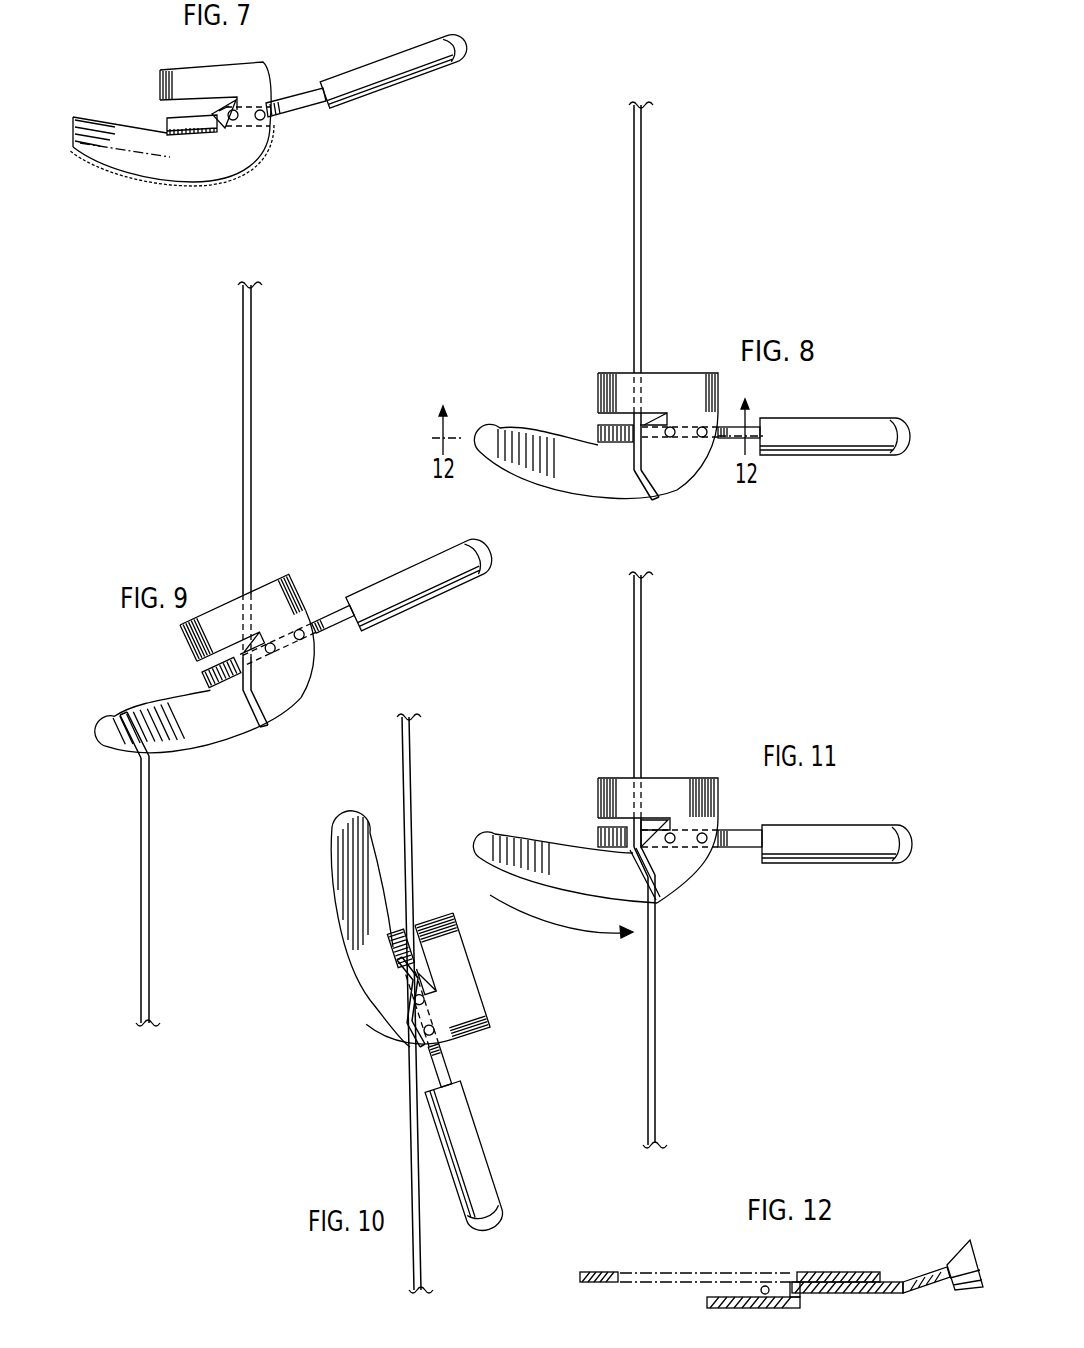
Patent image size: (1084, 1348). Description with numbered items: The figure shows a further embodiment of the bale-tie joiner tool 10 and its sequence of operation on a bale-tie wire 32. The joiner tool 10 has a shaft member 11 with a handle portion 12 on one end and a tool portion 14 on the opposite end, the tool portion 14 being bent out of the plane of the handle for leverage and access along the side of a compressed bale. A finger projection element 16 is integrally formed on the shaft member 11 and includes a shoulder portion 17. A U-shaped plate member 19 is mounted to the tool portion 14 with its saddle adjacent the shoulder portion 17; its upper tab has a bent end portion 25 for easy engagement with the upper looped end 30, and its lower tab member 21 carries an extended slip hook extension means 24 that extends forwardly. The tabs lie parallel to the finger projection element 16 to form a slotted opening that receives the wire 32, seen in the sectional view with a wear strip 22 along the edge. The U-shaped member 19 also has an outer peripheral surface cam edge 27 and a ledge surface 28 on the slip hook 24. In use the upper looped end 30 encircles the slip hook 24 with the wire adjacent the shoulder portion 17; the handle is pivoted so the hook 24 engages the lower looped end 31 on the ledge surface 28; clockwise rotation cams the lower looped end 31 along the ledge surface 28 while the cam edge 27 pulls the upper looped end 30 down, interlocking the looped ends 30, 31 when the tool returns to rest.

In FIG. 7, the bale-tie joiner tool 10 is at (270, 114).
In FIG. 9, the bale-tie joiner tool 10 is at (294, 652).
In FIG. 7, the shaft member 11 is at (309, 111).
In FIG. 8, the shaft member 11 is at (753, 424).
In FIG. 9, the shaft member 11 is at (330, 610).
In FIG. 10, the shaft member 11 is at (450, 1068).
In FIG. 11, the shaft member 11 is at (747, 832).
In FIG. 12, the shaft member 11 is at (902, 1280).
In FIG. 7, the handle portion 12 is at (416, 84).
In FIG. 8, the handle portion 12 is at (851, 425).
In FIG. 9, the handle portion 12 is at (429, 553).
In FIG. 10, the handle portion 12 is at (495, 1157).
In FIG. 11, the handle portion 12 is at (863, 830).
In FIG. 7, the tool portion 14 is at (151, 105).
In FIG. 8, the tool portion 14 is at (582, 417).
In FIG. 9, the tool portion 14 is at (183, 667).
In FIG. 11, the tool portion 14 is at (583, 798).
In FIG. 7, the finger projection element 16 is at (168, 125).
In FIG. 12, the finger projection element 16 is at (731, 1304).
In FIG. 7, the shoulder portion 17 is at (234, 107).
In FIG. 8, the shoulder portion 17 is at (637, 430).
In FIG. 12, the shoulder portion 17 is at (803, 1298).
In FIG. 7, the U-shaped plate member 19 is at (248, 159).
In FIG. 8, the U-shaped plate member 19 is at (697, 409).
In FIG. 9, the U-shaped plate member 19 is at (302, 680).
In FIG. 10, the U-shaped plate member 19 is at (474, 1018).
In FIG. 11, the U-shaped plate member 19 is at (684, 812).
In FIG. 7, the lower tab member 21 is at (207, 77).
In FIG. 8, the lower tab member 21 is at (625, 383).
In FIG. 9, the lower tab member 21 is at (225, 620).
In FIG. 10, the lower tab member 21 is at (345, 950).
In FIG. 11, the lower tab member 21 is at (617, 778).
In FIG. 12, the lower tab member 21 is at (678, 1277).
In FIG. 7, the wear strip 22 is at (266, 163).
In FIG. 7, the extended slip hook extension means 24 is at (117, 163).
In FIG. 8, the extended slip hook extension means 24 is at (495, 447).
In FIG. 10, the extended slip hook extension means 24 is at (342, 845).
In FIG. 11, the extended slip hook extension means 24 is at (503, 833).
In FIG. 12, the extended slip hook extension means 24 is at (642, 1277).
In FIG. 7, the end portion 25 is at (164, 68).
In FIG. 8, the end portion 25 is at (602, 393).
In FIG. 9, the outer peripheral surface cam edge 27 is at (291, 711).
In FIG. 10, the outer peripheral surface cam edge 27 is at (372, 1035).
In FIG. 9, the ledge surface 28 is at (160, 710).
In FIG. 10, the ledge surface 28 is at (371, 852).
In FIG. 8, the upper looped end 30 is at (640, 495).
In FIG. 10, the upper looped end 30 is at (407, 1045).
In FIG. 11, the upper looped end 30 is at (640, 893).
In FIG. 9, the lower looped end 31 is at (126, 758).
In FIG. 10, the lower looped end 31 is at (397, 968).
In FIG. 11, the lower looped end 31 is at (661, 874).
In FIG. 8, the bale-tie wire 32 is at (640, 242).
In FIG. 9, the bale-tie wire 32 is at (251, 440).
In FIG. 10, the bale-tie wire 32 is at (410, 788).
In FIG. 11, the bale-tie wire 32 is at (642, 653).
In FIG. 12, the bale-tie wire 32 is at (767, 1287).